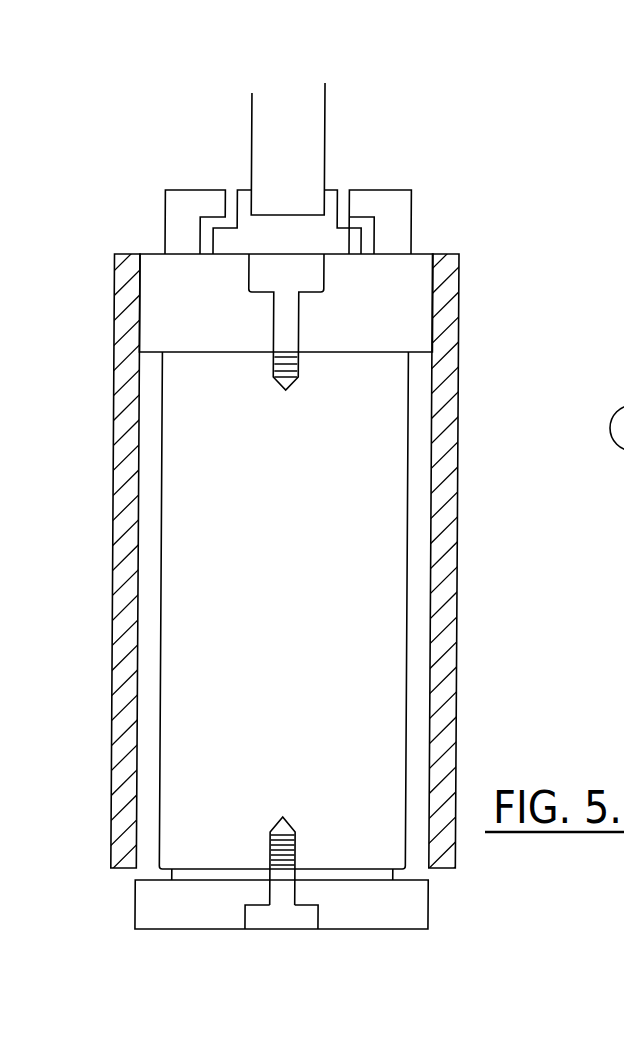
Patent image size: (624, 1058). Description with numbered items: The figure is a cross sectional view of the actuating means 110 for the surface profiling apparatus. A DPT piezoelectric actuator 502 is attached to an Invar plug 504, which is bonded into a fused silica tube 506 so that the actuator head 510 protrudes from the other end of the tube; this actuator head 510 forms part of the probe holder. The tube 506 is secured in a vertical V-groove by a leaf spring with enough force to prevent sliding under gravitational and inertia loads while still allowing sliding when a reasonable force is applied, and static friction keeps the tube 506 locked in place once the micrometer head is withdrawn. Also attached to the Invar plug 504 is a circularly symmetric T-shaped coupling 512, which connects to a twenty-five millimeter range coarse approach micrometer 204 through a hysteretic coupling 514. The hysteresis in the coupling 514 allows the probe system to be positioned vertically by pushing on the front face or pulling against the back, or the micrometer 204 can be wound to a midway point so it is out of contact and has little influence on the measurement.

The actuating means 110 is at (131, 178).
The coarse approach micrometer 204 is at (314, 182).
The DPT piezoelectric actuator 502 is at (312, 652).
The Invar plug 504 is at (233, 320).
The fused silica tube 506 is at (114, 505).
The actuator head 510 is at (214, 917).
The T-shaped coupling 512 is at (177, 202).
The hysteretic coupling 514 is at (310, 245).